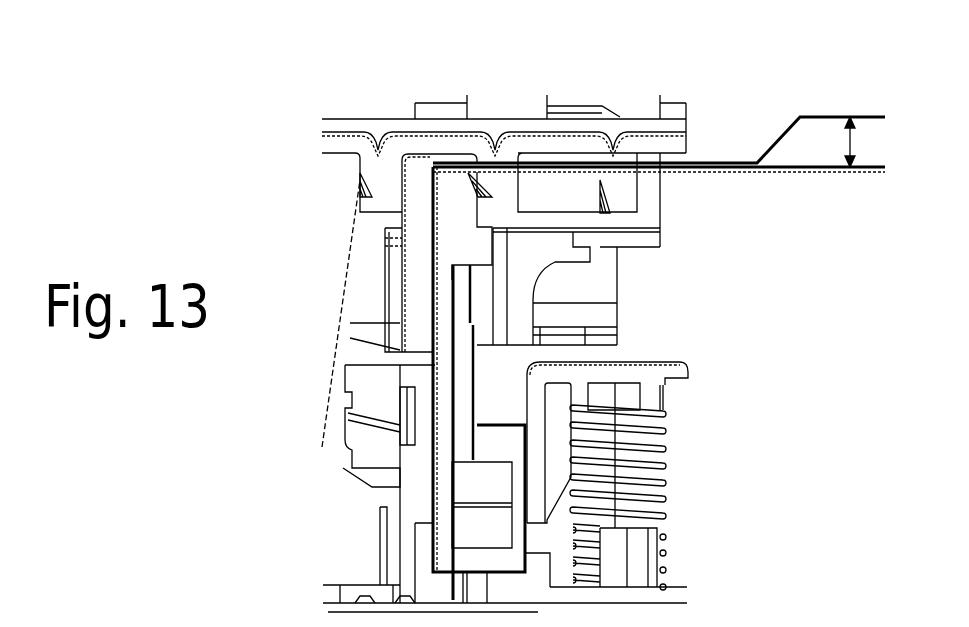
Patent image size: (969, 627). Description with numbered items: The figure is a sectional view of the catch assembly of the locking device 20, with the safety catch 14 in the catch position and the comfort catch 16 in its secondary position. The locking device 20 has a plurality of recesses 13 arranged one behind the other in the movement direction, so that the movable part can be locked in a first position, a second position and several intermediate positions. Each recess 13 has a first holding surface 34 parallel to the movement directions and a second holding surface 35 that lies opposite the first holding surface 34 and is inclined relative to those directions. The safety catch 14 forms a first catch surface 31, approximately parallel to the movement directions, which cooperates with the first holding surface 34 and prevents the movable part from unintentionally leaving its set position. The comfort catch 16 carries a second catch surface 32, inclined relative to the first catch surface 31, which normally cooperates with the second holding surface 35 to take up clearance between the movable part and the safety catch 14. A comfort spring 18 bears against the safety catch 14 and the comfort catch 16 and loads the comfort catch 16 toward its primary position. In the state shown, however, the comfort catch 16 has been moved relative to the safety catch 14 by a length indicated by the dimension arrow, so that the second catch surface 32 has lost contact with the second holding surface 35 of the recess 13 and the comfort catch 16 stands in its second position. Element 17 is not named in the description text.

The recess 13 is at (557, 191).
The safety catch 14 is at (433, 205).
The comfort catch 16 is at (456, 223).
The spring 17 is at (655, 462).
The comfort spring 18 is at (365, 340).
The locking device 20 is at (413, 237).
The first catch surface 31 is at (401, 200).
The second catch surface 32 is at (497, 198).
The first holding surface 34 is at (416, 158).
The second holding surface 35 is at (359, 193).